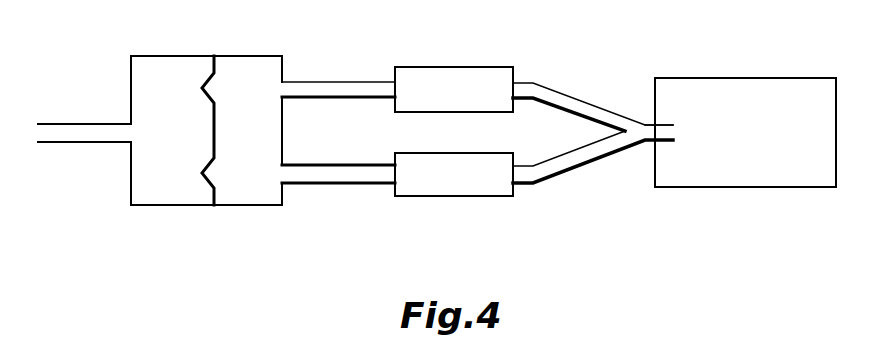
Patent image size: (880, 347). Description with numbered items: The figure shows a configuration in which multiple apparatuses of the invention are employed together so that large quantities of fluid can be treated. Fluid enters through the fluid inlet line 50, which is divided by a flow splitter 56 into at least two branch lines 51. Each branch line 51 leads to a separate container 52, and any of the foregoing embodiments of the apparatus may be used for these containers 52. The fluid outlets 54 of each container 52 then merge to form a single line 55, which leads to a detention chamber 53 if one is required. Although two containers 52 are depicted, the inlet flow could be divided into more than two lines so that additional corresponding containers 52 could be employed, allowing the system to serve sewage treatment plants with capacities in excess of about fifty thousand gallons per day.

The fluid inlet line 50 is at (118, 122).
The branch lines 51 is at (348, 98).
The container 52 is at (488, 112).
The detention chamber 53 is at (745, 78).
The fluid outlets 54 is at (575, 126).
The single line 55 is at (659, 124).
The flow splitter 56 is at (147, 56).